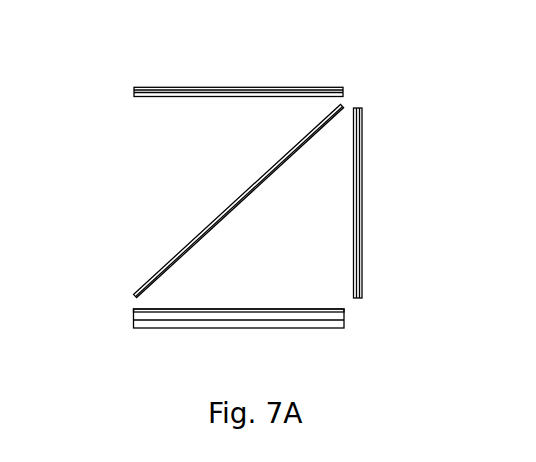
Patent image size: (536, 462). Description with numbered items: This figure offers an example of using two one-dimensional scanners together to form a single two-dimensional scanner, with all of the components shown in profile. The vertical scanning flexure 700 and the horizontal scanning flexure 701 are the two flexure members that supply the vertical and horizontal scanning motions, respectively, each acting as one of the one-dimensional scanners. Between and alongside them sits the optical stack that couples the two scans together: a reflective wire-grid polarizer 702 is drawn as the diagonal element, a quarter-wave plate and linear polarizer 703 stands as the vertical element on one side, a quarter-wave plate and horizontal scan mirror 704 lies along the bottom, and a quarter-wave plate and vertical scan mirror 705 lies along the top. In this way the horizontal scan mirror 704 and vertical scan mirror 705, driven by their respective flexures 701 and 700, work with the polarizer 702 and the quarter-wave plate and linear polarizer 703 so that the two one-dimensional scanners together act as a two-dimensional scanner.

The vertical scanning flexure 700 is at (185, 66).
The horizontal scanning flexure 701 is at (225, 342).
The reflective wire-grid polarizer 702 is at (228, 198).
The quarter-wave plate and linear polarizer 703 is at (367, 204).
The quarter-wave plate and horizontal scan mirror 704 is at (132, 309).
The quarter-wave plate and vertical scan mirror 705 is at (238, 78).